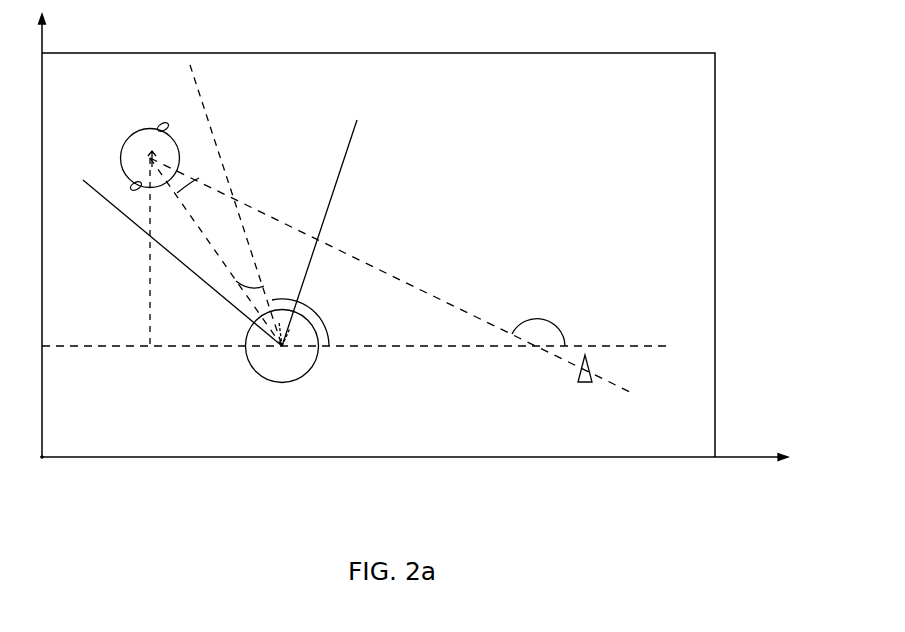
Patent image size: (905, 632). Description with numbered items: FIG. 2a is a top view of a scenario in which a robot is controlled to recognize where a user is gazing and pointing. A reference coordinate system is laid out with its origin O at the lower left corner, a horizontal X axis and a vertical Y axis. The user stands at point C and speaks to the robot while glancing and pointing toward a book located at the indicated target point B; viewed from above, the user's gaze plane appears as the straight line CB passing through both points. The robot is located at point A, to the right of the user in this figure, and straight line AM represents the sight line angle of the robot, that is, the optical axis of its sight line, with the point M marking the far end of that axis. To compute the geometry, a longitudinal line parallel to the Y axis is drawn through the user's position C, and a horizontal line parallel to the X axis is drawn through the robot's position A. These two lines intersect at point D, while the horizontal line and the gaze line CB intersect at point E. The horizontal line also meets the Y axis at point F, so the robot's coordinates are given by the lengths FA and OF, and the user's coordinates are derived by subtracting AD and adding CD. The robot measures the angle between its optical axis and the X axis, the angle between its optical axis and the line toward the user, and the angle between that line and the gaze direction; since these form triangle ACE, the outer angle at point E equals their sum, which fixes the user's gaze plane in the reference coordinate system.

The position of the robot A is at (282, 346).
The position of the indicated target B is at (571, 377).
The position of the user C is at (163, 156).
The intersection point of horizontal line and longitudinal line D is at (140, 268).
The intersection point of horizontal line and gaze line E is at (390, 275).
The intersection point of horizontal line and Y axis F is at (339, 357).
The end point of sight line of the robot M is at (236, 205).
The origin of the reference coordinate system O is at (27, 468).
The X axis of the reference coordinate system X is at (415, 472).
The Y axis of the reference coordinate system Y is at (25, 235).